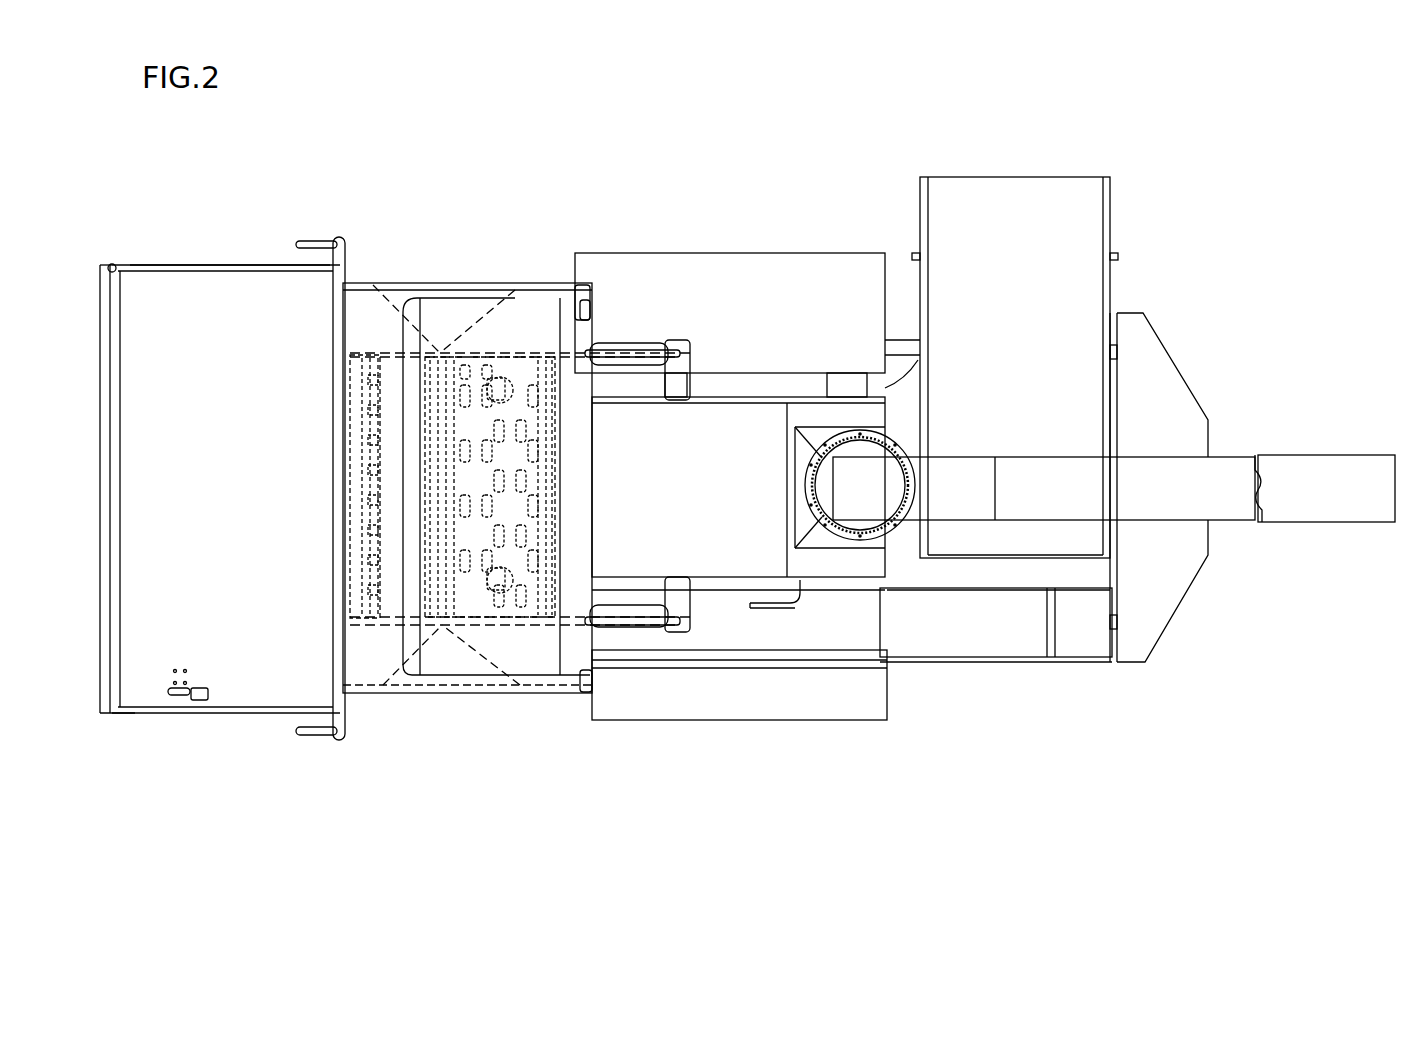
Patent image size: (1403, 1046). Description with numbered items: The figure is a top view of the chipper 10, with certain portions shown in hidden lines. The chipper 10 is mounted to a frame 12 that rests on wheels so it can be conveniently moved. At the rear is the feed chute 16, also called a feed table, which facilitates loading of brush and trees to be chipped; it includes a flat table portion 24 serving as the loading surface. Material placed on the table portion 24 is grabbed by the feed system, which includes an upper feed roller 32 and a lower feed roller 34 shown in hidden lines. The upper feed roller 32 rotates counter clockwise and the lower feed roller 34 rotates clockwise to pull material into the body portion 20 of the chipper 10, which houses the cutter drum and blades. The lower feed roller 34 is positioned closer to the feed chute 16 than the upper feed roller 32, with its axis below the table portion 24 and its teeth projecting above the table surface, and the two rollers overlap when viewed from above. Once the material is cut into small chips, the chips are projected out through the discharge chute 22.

The chipper 10 is at (968, 752).
The frame 12 is at (1013, 663).
The feed chute 16 is at (152, 264).
The body portion 20 is at (694, 494).
The discharge chute 22 is at (1228, 455).
The table portion 24 is at (221, 494).
The upper feed roller 32 is at (515, 357).
The lower feed roller 34 is at (370, 357).